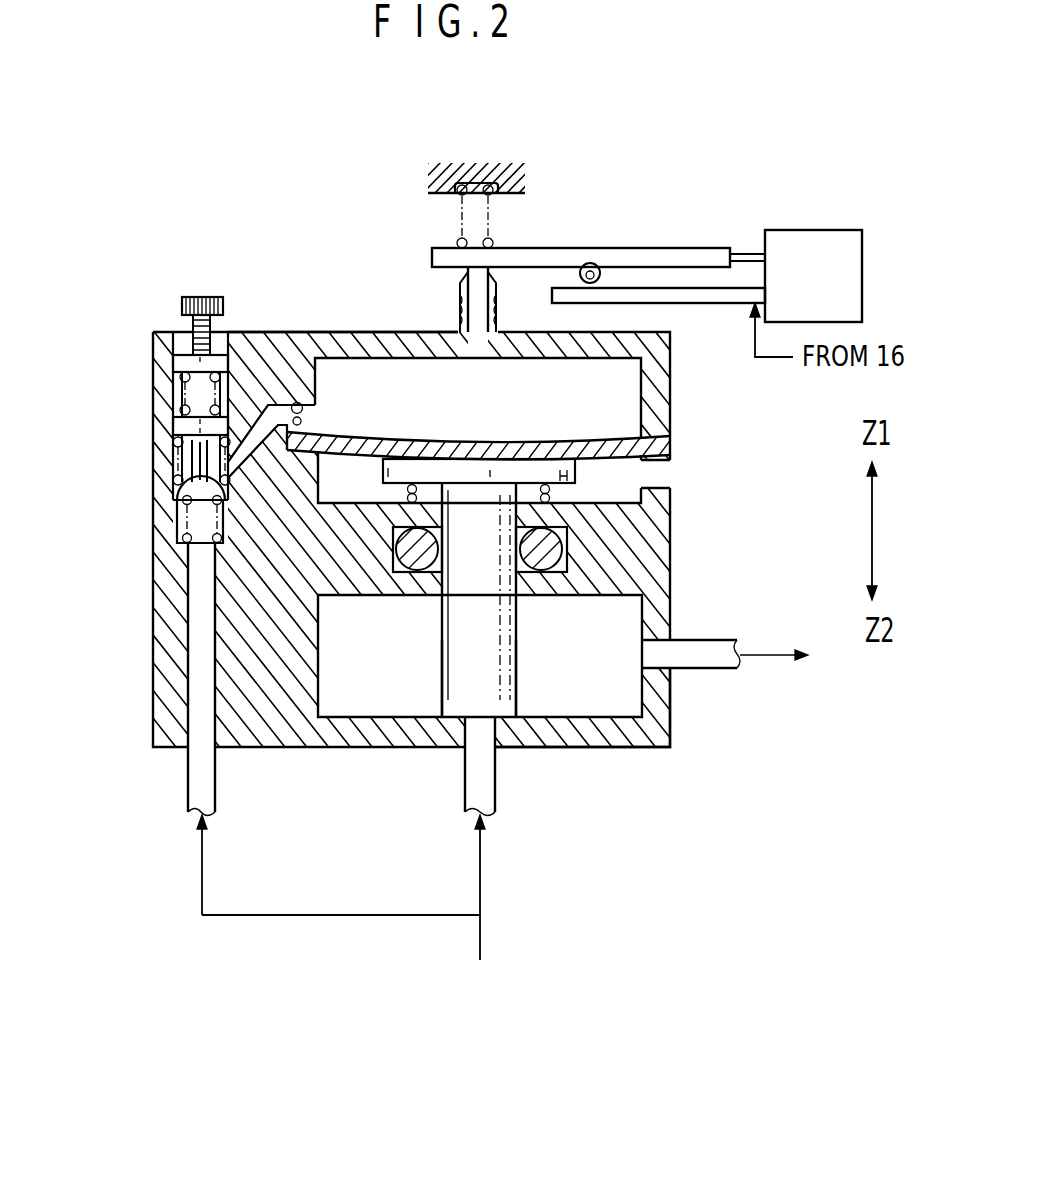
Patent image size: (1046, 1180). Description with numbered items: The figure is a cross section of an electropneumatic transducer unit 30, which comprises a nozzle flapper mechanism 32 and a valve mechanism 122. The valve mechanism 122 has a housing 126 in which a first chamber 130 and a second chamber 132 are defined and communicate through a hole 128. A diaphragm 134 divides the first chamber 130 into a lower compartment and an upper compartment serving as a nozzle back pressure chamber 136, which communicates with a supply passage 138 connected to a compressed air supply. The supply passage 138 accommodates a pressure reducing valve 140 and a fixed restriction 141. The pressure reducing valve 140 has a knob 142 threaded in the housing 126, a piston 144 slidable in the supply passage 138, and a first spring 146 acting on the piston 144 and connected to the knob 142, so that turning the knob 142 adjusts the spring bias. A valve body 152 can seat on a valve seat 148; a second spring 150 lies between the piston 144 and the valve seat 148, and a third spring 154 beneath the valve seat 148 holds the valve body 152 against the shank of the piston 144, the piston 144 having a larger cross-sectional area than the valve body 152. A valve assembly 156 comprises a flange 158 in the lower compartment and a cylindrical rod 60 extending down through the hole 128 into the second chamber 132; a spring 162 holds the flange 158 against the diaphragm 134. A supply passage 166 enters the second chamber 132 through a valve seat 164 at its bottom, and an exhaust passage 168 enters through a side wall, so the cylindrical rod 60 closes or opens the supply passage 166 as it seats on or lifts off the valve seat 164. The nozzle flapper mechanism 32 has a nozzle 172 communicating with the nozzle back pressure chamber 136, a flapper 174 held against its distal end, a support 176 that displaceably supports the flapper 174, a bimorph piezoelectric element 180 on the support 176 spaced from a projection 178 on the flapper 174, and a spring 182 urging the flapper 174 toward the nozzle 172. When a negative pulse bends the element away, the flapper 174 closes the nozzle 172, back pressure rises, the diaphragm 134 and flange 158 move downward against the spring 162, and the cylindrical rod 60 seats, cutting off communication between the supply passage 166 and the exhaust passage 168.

The electropneumatic transducer unit 30 is at (375, 135).
The nozzle flapper mechanism 32 is at (604, 127).
The cylindrical rod 60 is at (487, 663).
The valve mechanism 122 is at (136, 338).
The housing 126 is at (290, 345).
The hole 128 is at (455, 588).
The first chamber 130 is at (615, 462).
The second chamber 132 is at (612, 690).
The diaphragm 134 is at (597, 443).
The nozzle back pressure chamber 136 is at (385, 380).
The supply passage 138 is at (203, 692).
The pressure reducing valve 140 is at (134, 413).
The fixed restriction 141 is at (300, 402).
The knob 142 is at (193, 340).
The piston 144 is at (180, 432).
The first spring 146 is at (180, 383).
The valve seat 148 is at (178, 497).
The second spring 150 is at (180, 490).
The valve body 152 is at (192, 537).
The third spring 154 is at (190, 568).
The valve assembly 156 is at (500, 617).
The flange 158 is at (575, 482).
The spring 162 is at (550, 496).
The valve seat 164 is at (510, 715).
The supply passage 166 is at (481, 782).
The exhaust passage 168 is at (693, 660).
The nozzle 172 is at (494, 300).
The flapper 174 is at (558, 246).
The support 176 is at (805, 236).
The projection 178 is at (594, 262).
The bimorph piezoelectric element 180 is at (722, 302).
The spring 182 is at (452, 207).